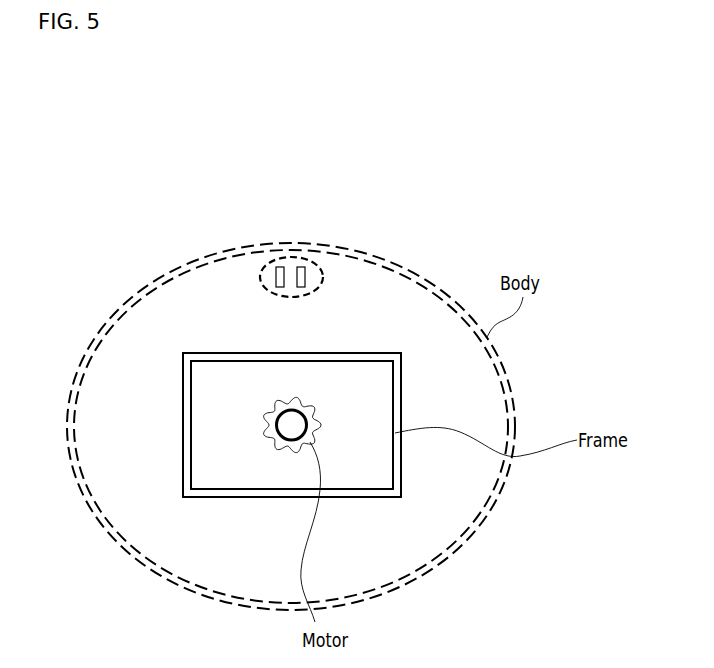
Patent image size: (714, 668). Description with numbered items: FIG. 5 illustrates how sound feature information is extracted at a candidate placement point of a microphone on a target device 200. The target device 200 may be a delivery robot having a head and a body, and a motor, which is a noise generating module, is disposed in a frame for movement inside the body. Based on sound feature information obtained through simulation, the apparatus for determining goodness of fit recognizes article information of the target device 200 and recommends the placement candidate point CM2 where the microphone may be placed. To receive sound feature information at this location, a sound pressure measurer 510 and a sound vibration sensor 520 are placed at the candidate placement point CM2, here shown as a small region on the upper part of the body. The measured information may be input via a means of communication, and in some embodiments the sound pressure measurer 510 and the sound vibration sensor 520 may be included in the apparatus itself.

The target device 200 is at (105, 237).
The sound pressure measurer 510 is at (280, 267).
The sound vibration sensor 520 is at (301, 267).
The placement candidate point CM2 is at (260, 282).